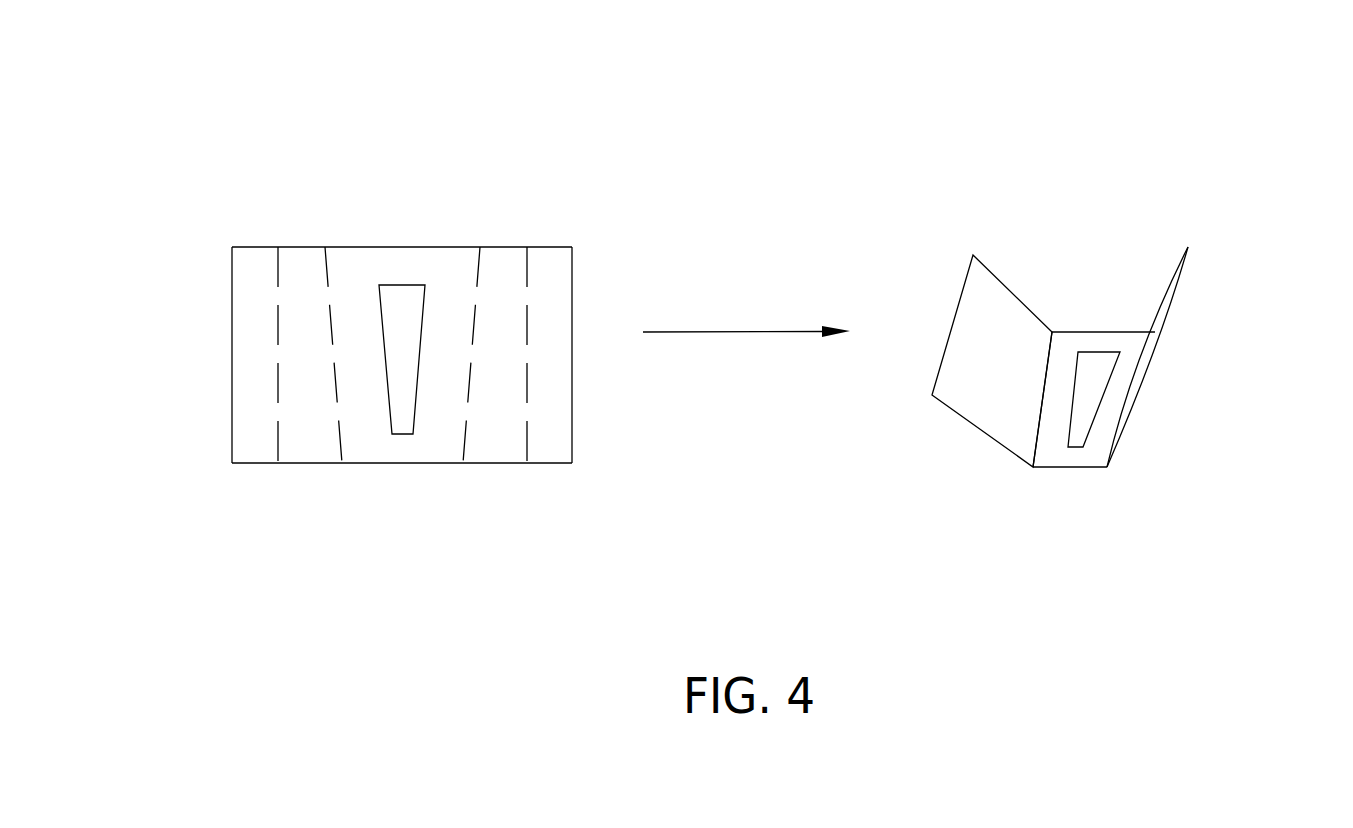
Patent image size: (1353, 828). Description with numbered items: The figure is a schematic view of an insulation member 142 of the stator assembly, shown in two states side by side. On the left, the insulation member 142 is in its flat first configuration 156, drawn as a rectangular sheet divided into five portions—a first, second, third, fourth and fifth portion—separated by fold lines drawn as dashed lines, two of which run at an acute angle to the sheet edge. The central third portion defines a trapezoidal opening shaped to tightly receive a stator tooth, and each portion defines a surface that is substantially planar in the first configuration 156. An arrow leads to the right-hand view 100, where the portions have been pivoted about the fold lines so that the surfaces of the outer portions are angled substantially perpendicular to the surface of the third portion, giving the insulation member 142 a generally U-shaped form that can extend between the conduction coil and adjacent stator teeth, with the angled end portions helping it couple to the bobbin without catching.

The folded heat sink assembly 100 is at (1118, 198).
The insulation member 142 is at (212, 308).
The first configuration 156 is at (425, 132).